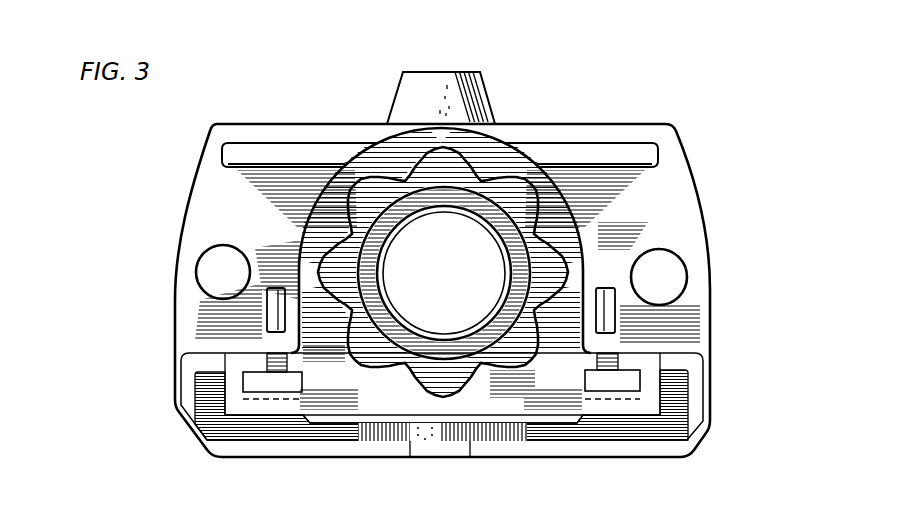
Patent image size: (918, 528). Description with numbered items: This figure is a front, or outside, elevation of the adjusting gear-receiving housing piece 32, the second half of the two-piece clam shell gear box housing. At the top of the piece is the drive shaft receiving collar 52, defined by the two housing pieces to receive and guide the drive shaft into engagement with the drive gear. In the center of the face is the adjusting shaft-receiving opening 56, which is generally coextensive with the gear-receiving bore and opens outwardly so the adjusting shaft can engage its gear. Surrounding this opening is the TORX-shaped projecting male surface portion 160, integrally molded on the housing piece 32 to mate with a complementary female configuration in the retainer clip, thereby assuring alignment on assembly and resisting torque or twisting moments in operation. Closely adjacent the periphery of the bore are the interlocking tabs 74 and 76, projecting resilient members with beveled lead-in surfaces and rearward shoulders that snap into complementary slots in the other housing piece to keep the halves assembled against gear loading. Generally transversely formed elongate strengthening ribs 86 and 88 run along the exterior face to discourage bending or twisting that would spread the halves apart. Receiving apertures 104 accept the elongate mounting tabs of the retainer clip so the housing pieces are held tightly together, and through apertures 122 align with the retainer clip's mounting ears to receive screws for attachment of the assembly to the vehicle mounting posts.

The adjusting gear-receiving housing piece 32 is at (194, 174).
The drive shaft receiving collar 52 is at (482, 72).
The adjusting shaft-receiving opening 56 is at (455, 333).
The interlocking tab 74 is at (615, 313).
The interlocking tab 76 is at (272, 316).
The strengthening rib 86 is at (277, 155).
The strengthening rib 88 is at (258, 452).
The receiving aperture 104 is at (287, 383).
The through aperture 122 is at (200, 258).
The TORX-shaped projecting surface portion 160 is at (412, 172).